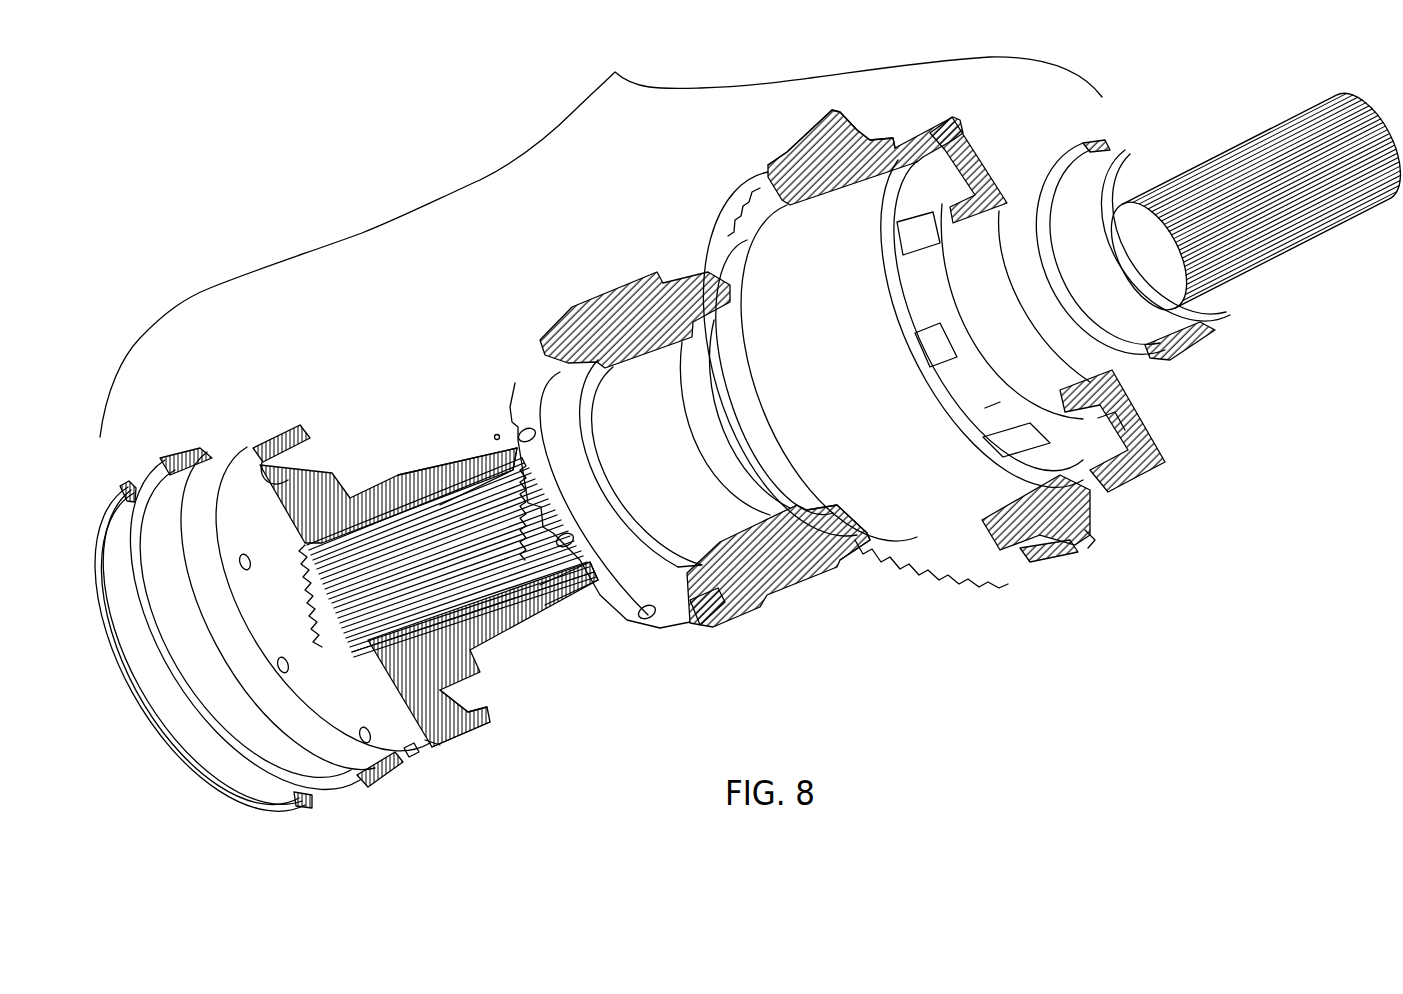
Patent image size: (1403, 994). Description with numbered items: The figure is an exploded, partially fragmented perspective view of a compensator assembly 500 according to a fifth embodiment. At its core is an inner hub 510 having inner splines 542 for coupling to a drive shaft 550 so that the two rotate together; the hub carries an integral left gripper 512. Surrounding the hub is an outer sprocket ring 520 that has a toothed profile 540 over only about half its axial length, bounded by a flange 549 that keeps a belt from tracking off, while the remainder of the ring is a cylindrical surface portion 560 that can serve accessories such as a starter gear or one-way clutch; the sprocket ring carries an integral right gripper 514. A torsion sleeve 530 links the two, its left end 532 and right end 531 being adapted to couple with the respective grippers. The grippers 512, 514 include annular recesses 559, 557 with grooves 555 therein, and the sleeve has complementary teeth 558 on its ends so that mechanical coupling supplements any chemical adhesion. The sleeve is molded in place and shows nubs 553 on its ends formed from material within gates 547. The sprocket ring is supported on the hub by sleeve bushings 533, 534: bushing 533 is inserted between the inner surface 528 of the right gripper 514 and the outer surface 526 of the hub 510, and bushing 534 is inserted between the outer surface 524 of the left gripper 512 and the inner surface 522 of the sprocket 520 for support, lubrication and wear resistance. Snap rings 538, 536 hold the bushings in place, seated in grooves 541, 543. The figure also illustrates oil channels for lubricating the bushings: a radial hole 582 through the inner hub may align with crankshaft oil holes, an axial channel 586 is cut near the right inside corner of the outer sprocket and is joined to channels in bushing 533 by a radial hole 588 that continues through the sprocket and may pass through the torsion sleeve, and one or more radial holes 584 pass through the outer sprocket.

The compensator assembly 500 is at (601, 242).
The inner hub 510 is at (470, 625).
The left gripper 512 is at (437, 694).
The right gripper 514 is at (1108, 425).
The outer sprocket ring 520 is at (1140, 467).
The inner surface of sprocket 522 is at (960, 520).
The outer surface of left gripper 524 is at (470, 735).
The outer surface of hub 526 is at (578, 580).
The inner surface of right gripper 528 is at (988, 237).
The torsion sleeve 530 is at (770, 605).
The right end of torsion sleeve 531 is at (848, 547).
The left end of torsion sleeve 532 is at (700, 598).
The sleeve bushing 533 is at (1208, 365).
The sleeve bushing 534 is at (360, 790).
The snap ring 536 is at (278, 820).
The snap ring 538 is at (1218, 322).
The toothed profile 540 is at (1035, 548).
The groove 541 is at (440, 745).
The inner splines 542 is at (466, 500).
The groove 543 is at (497, 437).
The gates 547 is at (412, 757).
The flange 549 is at (1100, 537).
The drive shaft 550 is at (1330, 225).
The nubs 553 is at (645, 620).
The grooves 555 is at (1085, 505).
The annular recess 557 is at (985, 408).
The teeth 558 is at (514, 392).
The annular recess 559 is at (305, 465).
The cylindrical surface portion 560 is at (1135, 485).
The radial hole 582 is at (468, 506).
The radial holes 584 is at (893, 140).
The axial channel 586 is at (968, 150).
The radial hole 588 is at (725, 275).